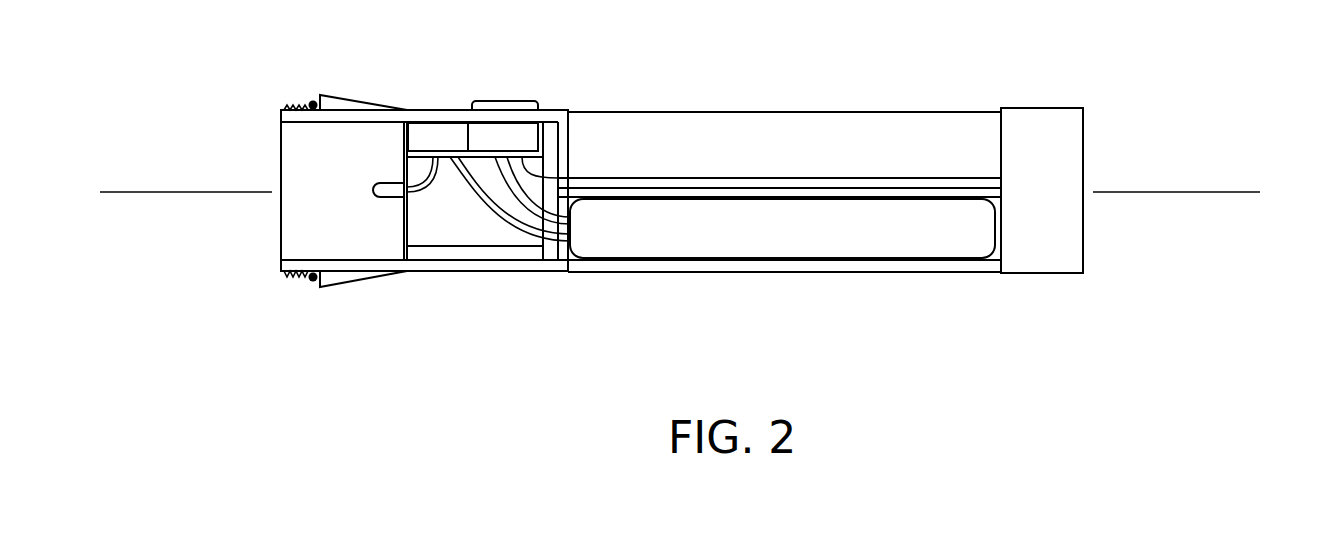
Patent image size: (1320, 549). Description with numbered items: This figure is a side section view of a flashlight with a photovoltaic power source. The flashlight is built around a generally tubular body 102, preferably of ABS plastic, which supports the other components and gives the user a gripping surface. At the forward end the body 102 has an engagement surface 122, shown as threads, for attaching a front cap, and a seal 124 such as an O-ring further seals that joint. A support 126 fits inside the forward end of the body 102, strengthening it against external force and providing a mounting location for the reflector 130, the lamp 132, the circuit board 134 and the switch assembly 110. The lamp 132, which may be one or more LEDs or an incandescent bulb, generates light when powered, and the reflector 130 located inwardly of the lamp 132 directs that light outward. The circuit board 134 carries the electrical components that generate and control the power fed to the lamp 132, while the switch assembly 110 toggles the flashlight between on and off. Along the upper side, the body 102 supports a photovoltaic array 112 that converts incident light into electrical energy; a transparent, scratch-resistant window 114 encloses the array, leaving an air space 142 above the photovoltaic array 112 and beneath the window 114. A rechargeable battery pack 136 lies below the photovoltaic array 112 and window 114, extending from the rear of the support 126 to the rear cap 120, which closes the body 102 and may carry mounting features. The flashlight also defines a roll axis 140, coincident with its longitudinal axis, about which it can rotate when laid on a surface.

The body 102 is at (568, 272).
The switch assembly 110 is at (518, 100).
The photovoltaic array 112 is at (888, 177).
The window 114 is at (803, 111).
The rear cap 120 is at (1048, 120).
The engagement surface 122 is at (297, 281).
The seal 124 is at (313, 100).
The support 126 is at (432, 248).
The reflector 130 is at (403, 157).
The lamp 132 is at (371, 190).
The circuit board 134 is at (447, 152).
The battery pack 136 is at (773, 242).
The roll axis 140 is at (1223, 190).
The air space 142 is at (677, 152).